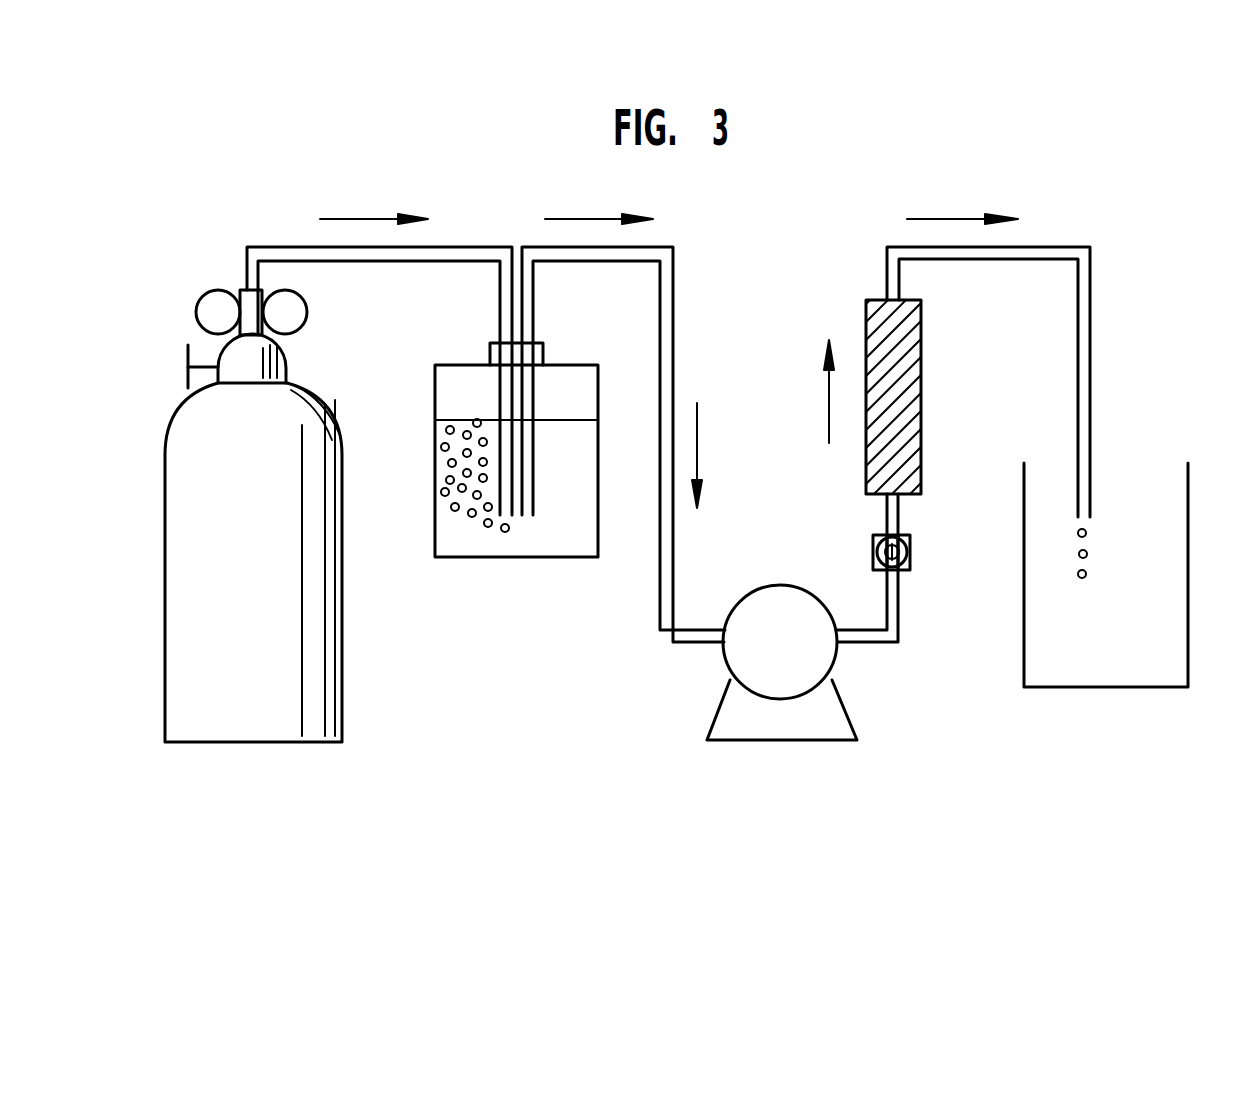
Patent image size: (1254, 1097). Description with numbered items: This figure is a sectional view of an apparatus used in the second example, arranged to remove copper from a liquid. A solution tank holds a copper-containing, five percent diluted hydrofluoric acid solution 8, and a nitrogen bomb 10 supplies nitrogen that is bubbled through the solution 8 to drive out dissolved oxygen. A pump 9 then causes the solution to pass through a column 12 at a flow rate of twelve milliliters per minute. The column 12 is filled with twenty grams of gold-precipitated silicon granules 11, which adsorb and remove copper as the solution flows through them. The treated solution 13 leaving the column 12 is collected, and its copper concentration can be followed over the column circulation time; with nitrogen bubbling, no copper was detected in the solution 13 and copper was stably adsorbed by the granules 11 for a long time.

The diluted hydrofluoric acid solution 8 is at (553, 535).
The pump 9 is at (772, 737).
The nitrogen bomb 10 is at (177, 523).
The gold-precipitated silicon granules 11 is at (888, 330).
The column 12 is at (865, 333).
The solution from the column 13 is at (1087, 577).